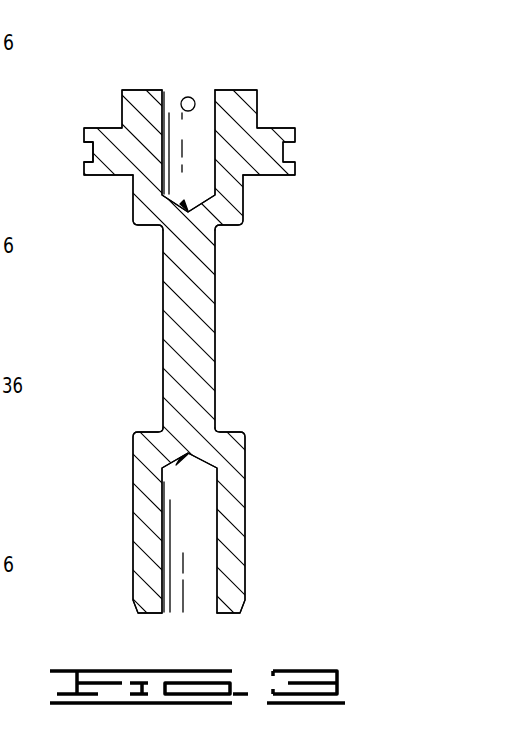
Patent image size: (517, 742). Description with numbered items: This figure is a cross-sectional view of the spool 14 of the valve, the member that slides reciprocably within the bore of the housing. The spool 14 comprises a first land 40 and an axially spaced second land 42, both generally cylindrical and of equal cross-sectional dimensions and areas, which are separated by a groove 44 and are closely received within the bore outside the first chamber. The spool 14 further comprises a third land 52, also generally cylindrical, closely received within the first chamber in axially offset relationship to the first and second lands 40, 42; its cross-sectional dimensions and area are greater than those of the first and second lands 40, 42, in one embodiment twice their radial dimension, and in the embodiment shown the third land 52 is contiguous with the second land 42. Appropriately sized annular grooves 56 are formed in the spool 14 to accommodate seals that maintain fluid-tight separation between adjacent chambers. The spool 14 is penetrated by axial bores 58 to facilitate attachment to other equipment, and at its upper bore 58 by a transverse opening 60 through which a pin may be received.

The spool 14 is at (197, 293).
The first land 40 is at (245, 515).
The second land 42 is at (245, 202).
The groove 44 is at (215, 377).
The third land 52 is at (268, 135).
The annular grooves 56 is at (90, 152).
The axial bores 58 is at (209, 148).
The transverse opening 60 is at (189, 97).